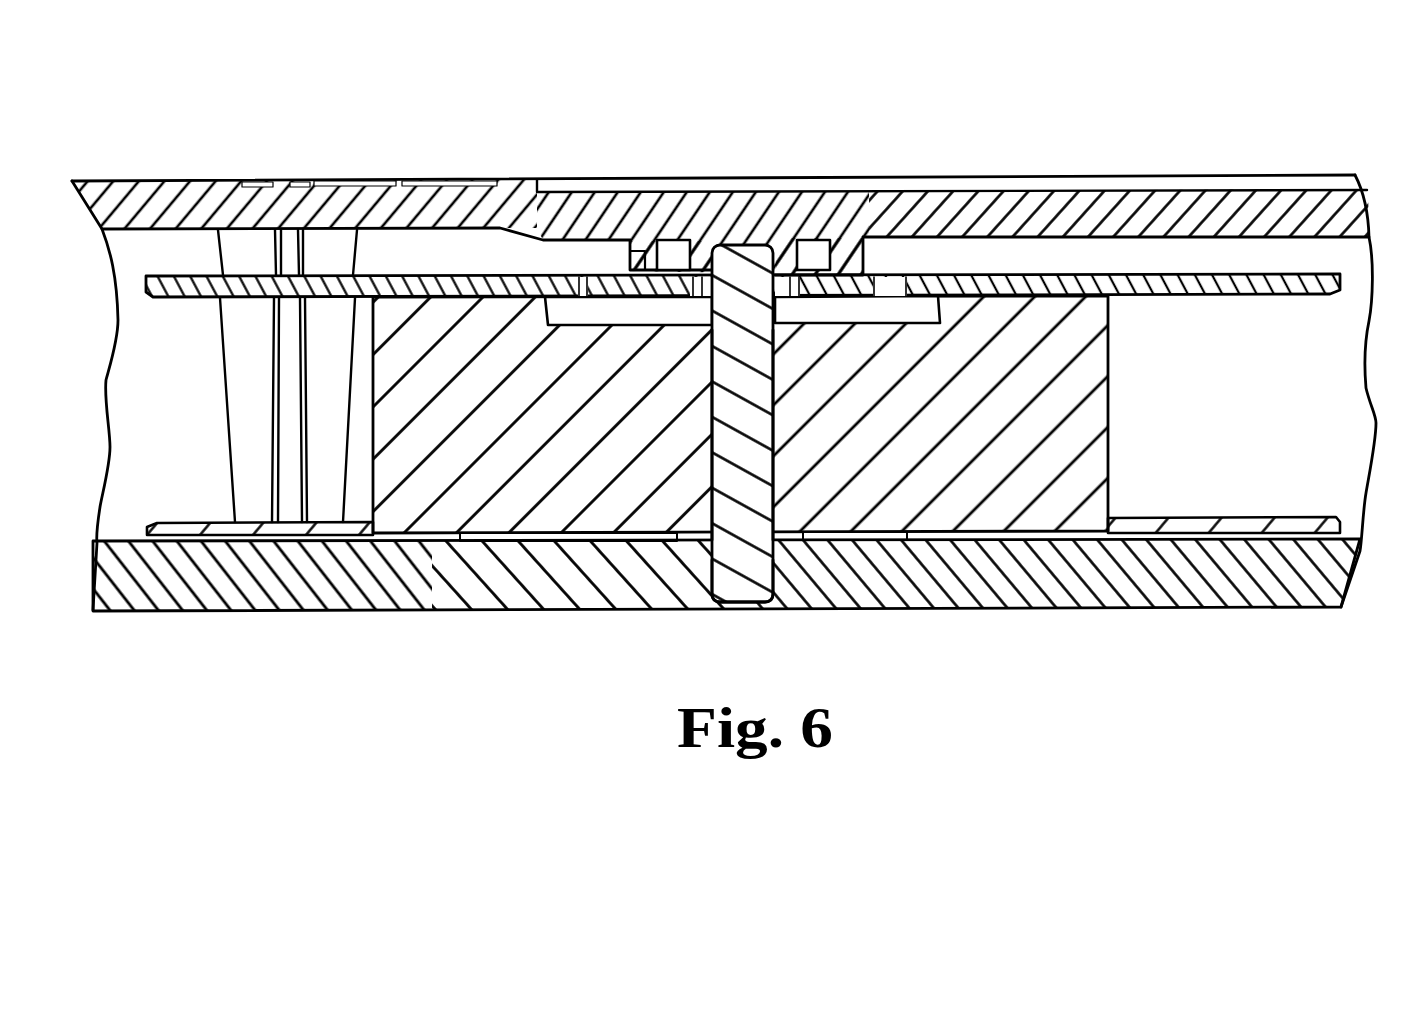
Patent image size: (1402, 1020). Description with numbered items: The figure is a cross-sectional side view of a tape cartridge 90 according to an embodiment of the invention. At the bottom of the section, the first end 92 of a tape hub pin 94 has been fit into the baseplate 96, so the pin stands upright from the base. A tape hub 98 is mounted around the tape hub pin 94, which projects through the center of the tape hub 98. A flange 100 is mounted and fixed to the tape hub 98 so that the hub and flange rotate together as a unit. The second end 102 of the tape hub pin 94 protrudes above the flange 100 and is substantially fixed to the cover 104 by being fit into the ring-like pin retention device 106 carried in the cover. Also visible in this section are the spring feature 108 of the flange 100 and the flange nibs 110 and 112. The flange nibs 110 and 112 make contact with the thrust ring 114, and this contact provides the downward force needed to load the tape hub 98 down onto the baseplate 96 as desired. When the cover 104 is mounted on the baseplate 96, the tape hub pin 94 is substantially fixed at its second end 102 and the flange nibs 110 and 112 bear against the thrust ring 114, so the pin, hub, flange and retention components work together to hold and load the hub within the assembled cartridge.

The tape cartridge 90 is at (1182, 125).
The first end 92 is at (742, 603).
The tape hub pin 94 is at (737, 448).
The baseplate 96 is at (1020, 598).
The tape hub 98 is at (1116, 437).
The flange 100 is at (1203, 288).
The second end 102 is at (692, 404).
The cover 104 is at (507, 175).
The pin retention device 106 is at (698, 257).
The spring feature 108 is at (873, 278).
The flange nib 110 is at (838, 238).
The flange nib 112 is at (651, 238).
The thrust ring 114 is at (630, 263).